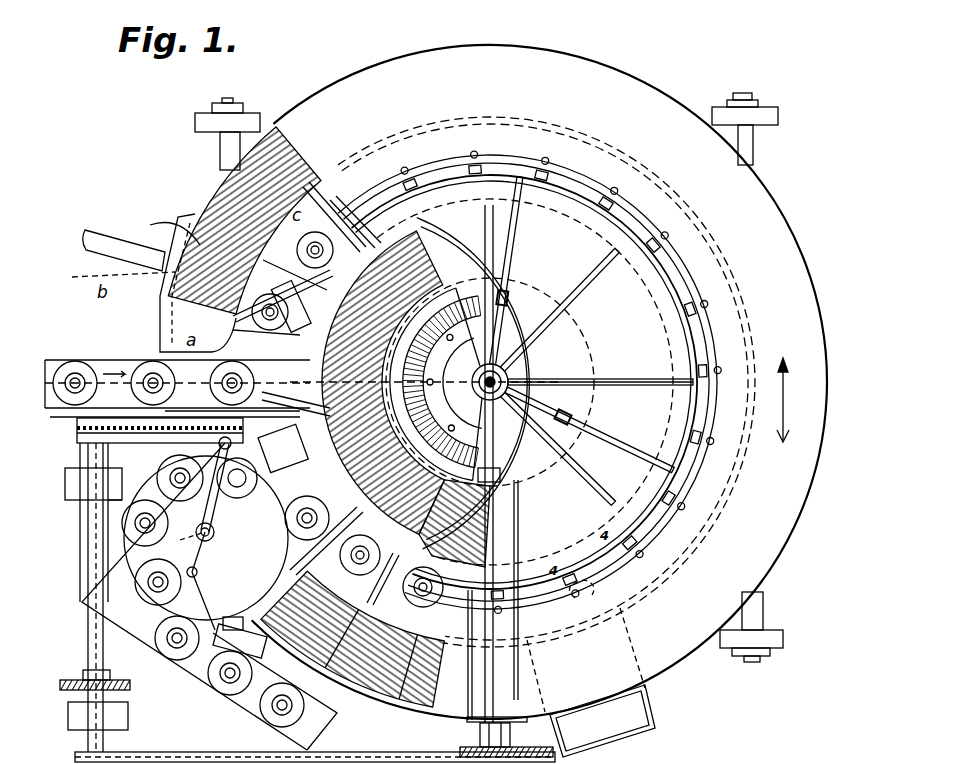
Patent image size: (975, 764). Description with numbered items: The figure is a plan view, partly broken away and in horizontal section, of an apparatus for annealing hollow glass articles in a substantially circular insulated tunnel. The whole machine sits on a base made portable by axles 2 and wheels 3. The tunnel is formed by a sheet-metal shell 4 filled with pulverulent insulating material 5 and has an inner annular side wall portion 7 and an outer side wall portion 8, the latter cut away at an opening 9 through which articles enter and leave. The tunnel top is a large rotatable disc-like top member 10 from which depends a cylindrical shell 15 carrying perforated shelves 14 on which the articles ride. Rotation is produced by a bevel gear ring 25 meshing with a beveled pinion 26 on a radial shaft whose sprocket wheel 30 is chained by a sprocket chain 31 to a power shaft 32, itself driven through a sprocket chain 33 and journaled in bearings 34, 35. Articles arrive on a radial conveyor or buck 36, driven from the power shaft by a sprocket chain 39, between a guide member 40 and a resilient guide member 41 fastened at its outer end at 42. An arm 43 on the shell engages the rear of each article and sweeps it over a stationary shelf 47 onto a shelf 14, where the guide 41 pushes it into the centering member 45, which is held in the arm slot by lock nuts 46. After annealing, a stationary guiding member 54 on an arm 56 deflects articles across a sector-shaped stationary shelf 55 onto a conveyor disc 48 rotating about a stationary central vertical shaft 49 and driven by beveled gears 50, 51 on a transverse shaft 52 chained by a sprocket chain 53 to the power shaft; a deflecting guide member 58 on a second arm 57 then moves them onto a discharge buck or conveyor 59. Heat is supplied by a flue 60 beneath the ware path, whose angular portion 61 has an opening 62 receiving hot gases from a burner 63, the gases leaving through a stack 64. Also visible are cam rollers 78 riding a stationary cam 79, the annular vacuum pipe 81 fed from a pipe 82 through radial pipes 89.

The axles 2 is at (220, 146).
The wheels 3 is at (196, 122).
The shell 4 is at (262, 140).
The insulating material 5 is at (420, 255).
The inner annular side wall portion 7 is at (498, 502).
The outer side wall portion 8 is at (350, 702).
The opening 9 is at (232, 318).
The top member 10 is at (800, 490).
The perforated shelves 14 is at (178, 222).
The cylindrical shell 15 is at (396, 236).
The bevel gear ring 25 is at (512, 330).
The beveled pinion 26 is at (495, 450).
The sprocket wheel 30 is at (512, 745).
The sprocket chain 31 is at (206, 752).
The power shaft 32 is at (88, 656).
The sprocket chain 33 is at (62, 692).
The bearing 34 is at (128, 716).
The bearing 35 is at (108, 500).
The conveyor or buck 36 is at (60, 362).
The sprocket chain 39 is at (85, 428).
The guide member 40 is at (108, 372).
The guide member 41 is at (233, 330).
The securing point of guide member 42 is at (150, 364).
The arm 43 is at (322, 188).
The centering member 45 is at (350, 200).
The lock nuts 46 is at (330, 692).
The stationary shelf 47 is at (280, 300).
The conveyor disc 48 is at (222, 672).
The stationary central vertical shaft 49 is at (205, 584).
The beveled gear 50 is at (187, 572).
The beveled gear 51 is at (180, 540).
The transverse shaft 52 is at (170, 456).
The sprocket chain 53 is at (65, 478).
The stationary guiding member 54 is at (286, 516).
The sector-shaped stationary shelf 55 is at (258, 646).
The arm 56 is at (196, 532).
The second arm 57 is at (100, 598).
The deflecting guide member 58 is at (160, 618).
The buck or conveyor 59 is at (200, 680).
The flue 60 is at (640, 600).
The angular portion of flue 61 is at (155, 222).
The opening 62 is at (110, 277).
The burner 63 is at (112, 242).
The stack 64 is at (650, 705).
The cam roller 78 is at (690, 370).
The stationary cam 79 is at (690, 396).
The annular pipe 81 is at (706, 284).
The pipe 82 is at (508, 376).
The radial pipes 89 is at (518, 237).